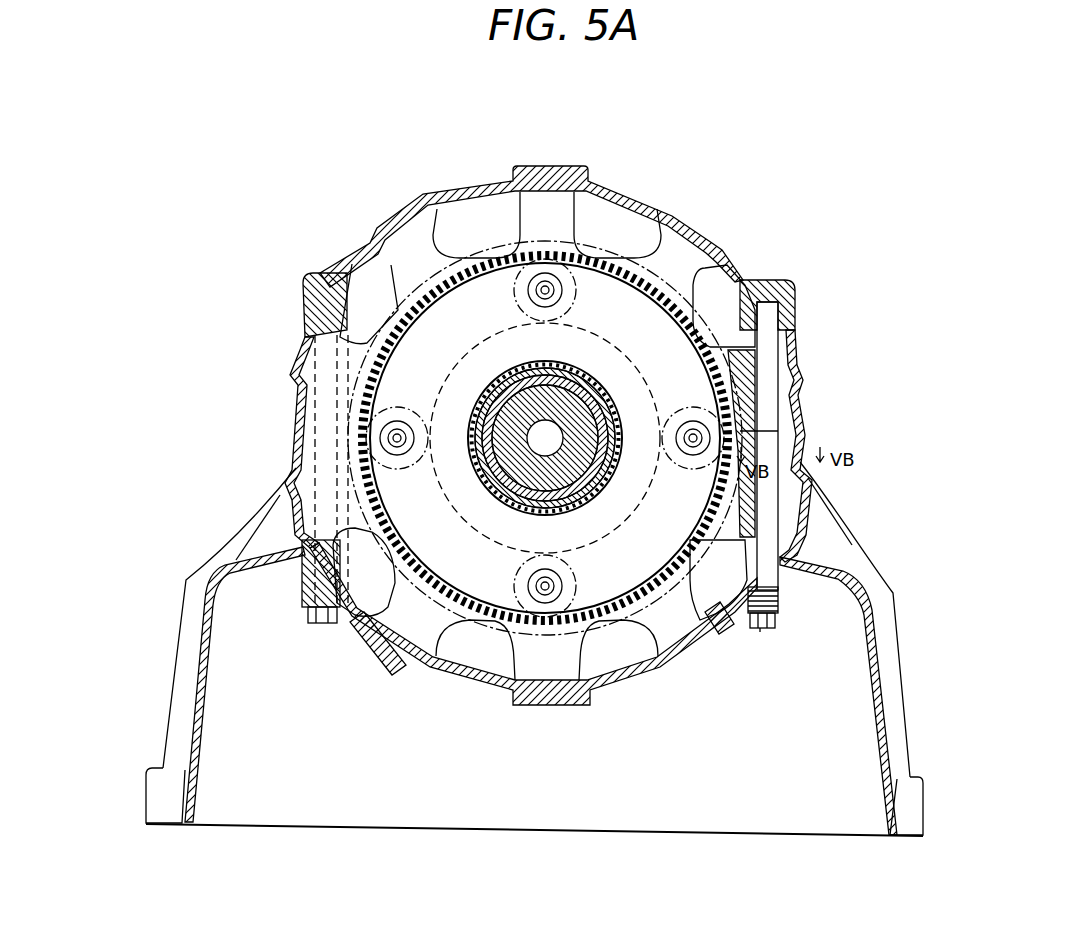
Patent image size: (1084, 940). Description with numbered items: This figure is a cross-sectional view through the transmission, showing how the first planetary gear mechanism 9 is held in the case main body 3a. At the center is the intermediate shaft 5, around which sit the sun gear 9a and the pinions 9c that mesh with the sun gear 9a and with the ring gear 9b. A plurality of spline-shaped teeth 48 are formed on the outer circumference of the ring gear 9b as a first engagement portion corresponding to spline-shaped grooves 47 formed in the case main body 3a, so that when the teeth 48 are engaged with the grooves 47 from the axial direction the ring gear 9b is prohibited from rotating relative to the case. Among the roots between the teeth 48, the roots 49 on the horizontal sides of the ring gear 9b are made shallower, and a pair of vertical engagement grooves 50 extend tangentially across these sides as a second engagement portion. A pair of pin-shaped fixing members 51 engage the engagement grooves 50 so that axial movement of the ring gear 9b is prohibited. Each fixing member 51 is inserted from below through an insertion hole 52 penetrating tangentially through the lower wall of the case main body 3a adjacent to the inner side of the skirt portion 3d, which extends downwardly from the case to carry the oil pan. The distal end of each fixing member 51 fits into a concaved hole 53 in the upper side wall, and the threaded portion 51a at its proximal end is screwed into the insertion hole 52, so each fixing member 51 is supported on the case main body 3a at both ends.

The case main body 3a is at (625, 190).
The skirt portion 3d is at (190, 697).
The intermediate shaft 5 is at (590, 405).
The first planetary gear mechanism 9 is at (383, 297).
The sun gear 9a is at (482, 548).
The ring gear 9b is at (572, 545).
The pinions 9c is at (592, 300).
The spline-shaped grooves 47 is at (571, 178).
The spline-shaped teeth 48 is at (430, 197).
The roots 49 is at (298, 437).
The vertical engagement grooves 50 is at (338, 369).
The pin-shaped fixing members 51 is at (325, 368).
The threaded portions 51a is at (760, 630).
The insertion holes 52 is at (306, 610).
The concaved holes 53 is at (318, 293).